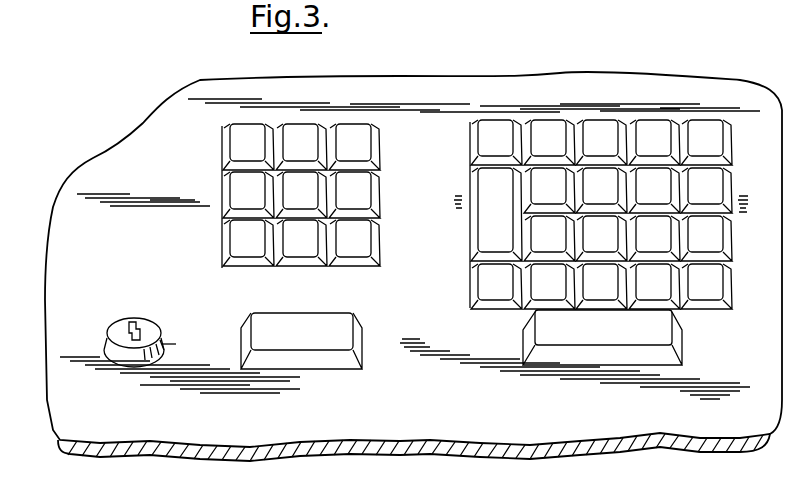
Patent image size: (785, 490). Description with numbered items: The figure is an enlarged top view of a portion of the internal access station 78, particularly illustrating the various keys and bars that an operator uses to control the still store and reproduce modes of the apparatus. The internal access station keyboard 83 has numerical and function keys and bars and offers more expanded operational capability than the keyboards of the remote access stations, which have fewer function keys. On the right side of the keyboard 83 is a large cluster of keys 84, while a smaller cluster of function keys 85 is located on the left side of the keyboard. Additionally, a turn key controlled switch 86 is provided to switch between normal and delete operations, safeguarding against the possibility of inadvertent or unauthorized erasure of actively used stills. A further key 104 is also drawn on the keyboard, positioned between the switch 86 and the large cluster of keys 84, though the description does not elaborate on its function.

The internal access station 78 is at (199, 80).
The internal access station keyboard 83 is at (418, 290).
The large cluster of keys 84 is at (561, 108).
The smaller cluster of function keys 85 is at (220, 157).
The turn key controlled switch 86 is at (105, 344).
The DEL/EDIT ENABLE key 104 is at (247, 318).